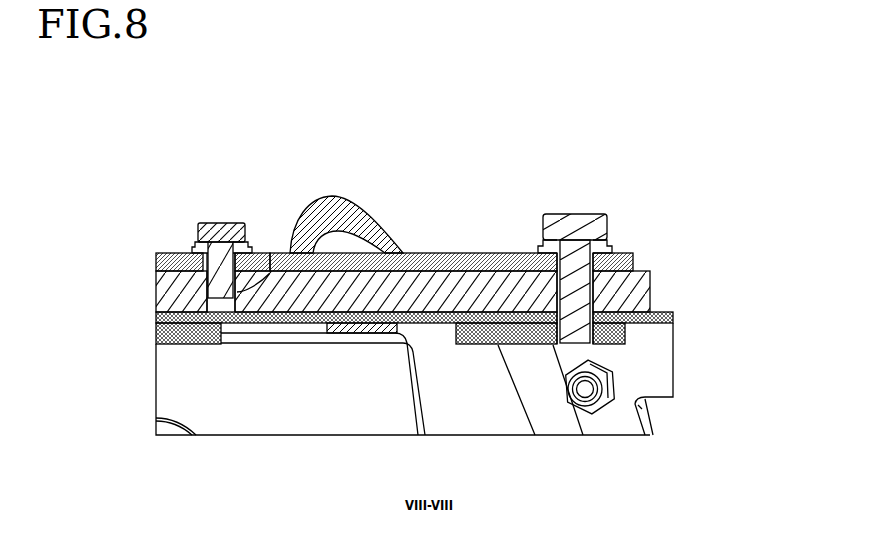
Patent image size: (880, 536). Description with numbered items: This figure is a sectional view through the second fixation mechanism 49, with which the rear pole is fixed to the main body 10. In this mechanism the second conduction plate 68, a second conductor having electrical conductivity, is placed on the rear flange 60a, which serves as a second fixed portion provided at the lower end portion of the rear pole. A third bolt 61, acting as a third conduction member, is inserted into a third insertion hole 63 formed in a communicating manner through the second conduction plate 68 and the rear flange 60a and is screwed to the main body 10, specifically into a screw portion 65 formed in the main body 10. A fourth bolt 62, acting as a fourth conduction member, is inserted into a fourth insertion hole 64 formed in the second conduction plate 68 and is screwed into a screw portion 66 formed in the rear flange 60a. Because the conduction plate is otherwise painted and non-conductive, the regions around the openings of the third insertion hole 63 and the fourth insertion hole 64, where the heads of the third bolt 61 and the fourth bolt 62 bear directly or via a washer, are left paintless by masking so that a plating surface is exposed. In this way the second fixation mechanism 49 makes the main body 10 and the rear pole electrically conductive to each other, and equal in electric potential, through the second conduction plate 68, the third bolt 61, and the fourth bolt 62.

The second fixation mechanism 49 is at (655, 181).
The main body 10 is at (627, 335).
The rear flange 60a is at (630, 293).
The third bolt 61 is at (573, 232).
The fourth bolt 62 is at (220, 235).
The third insertion hole 63 is at (527, 253).
The fourth insertion hole 64 is at (182, 252).
The screw portion 65 is at (503, 300).
The screw portion 66 is at (268, 253).
The second conduction plate 68 is at (412, 252).